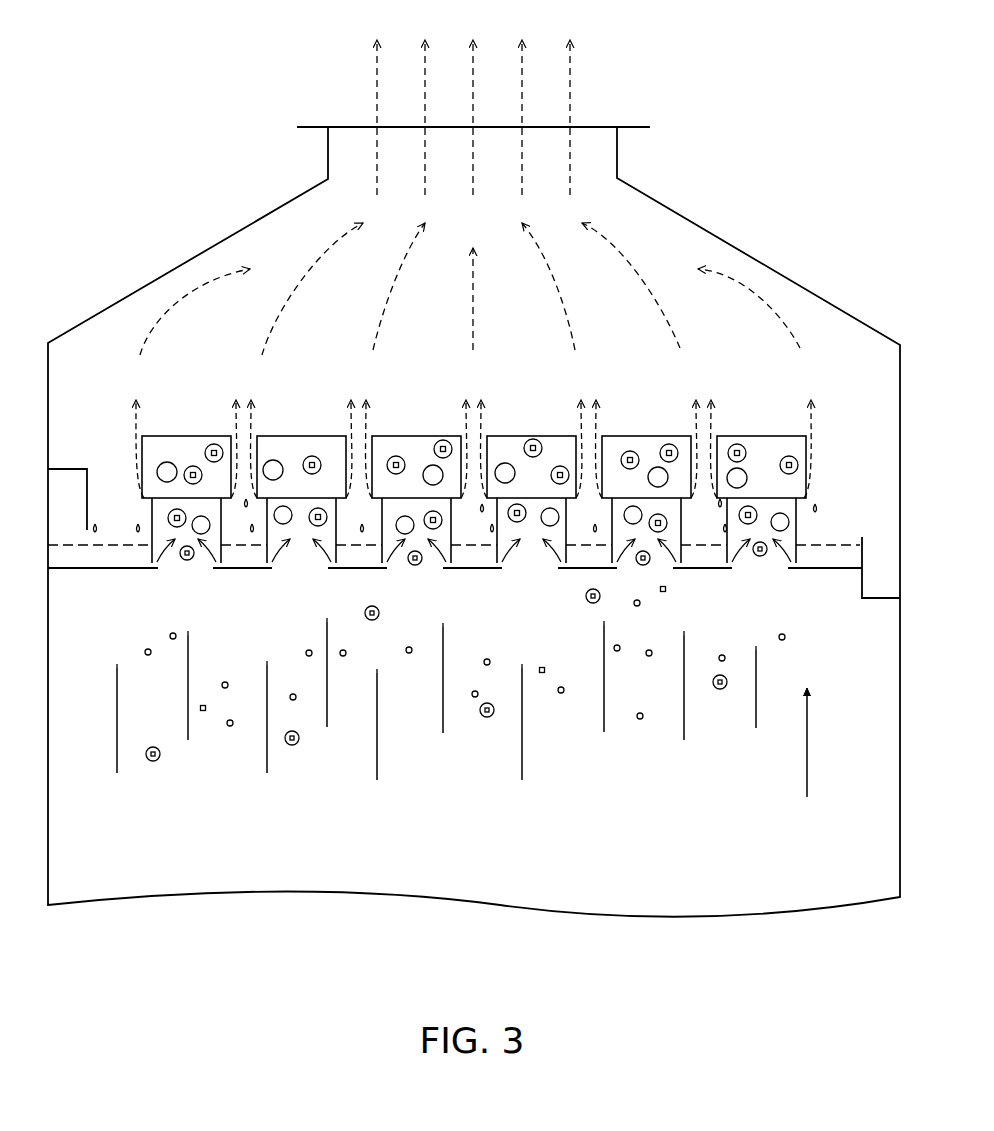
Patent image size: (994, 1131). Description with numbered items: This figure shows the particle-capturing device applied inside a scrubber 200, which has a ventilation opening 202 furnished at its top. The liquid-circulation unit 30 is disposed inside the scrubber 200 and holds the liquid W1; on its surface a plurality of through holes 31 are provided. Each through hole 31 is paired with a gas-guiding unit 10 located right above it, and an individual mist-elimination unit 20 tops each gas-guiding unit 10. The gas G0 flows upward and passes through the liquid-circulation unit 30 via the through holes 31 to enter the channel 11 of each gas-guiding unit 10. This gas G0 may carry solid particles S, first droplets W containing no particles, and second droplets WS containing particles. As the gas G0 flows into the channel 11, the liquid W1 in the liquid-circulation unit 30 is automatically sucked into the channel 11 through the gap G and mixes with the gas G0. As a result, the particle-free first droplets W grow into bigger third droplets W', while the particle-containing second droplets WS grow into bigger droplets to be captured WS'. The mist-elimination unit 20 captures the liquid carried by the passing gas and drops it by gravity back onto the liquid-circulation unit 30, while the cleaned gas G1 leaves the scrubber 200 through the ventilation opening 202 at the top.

The scrubber 200 is at (267, 211).
The ventilation opening 202 is at (356, 143).
The mist-elimination unit 20 is at (187, 432).
The gas-guiding unit 10 is at (223, 532).
The channel 11 is at (300, 530).
The liquid-circulation unit 30 is at (134, 574).
The through hole 31 is at (190, 574).
The cleaned gas flow G1 is at (572, 75).
The gas G0 is at (809, 780).
The gap G is at (150, 563).
The first droplets W is at (462, 698).
The second droplets WS is at (456, 676).
The solid particles S is at (203, 713).
The third droplets W' is at (533, 455).
The droplets to be captured WS' is at (532, 447).
The liquid W1 is at (470, 563).